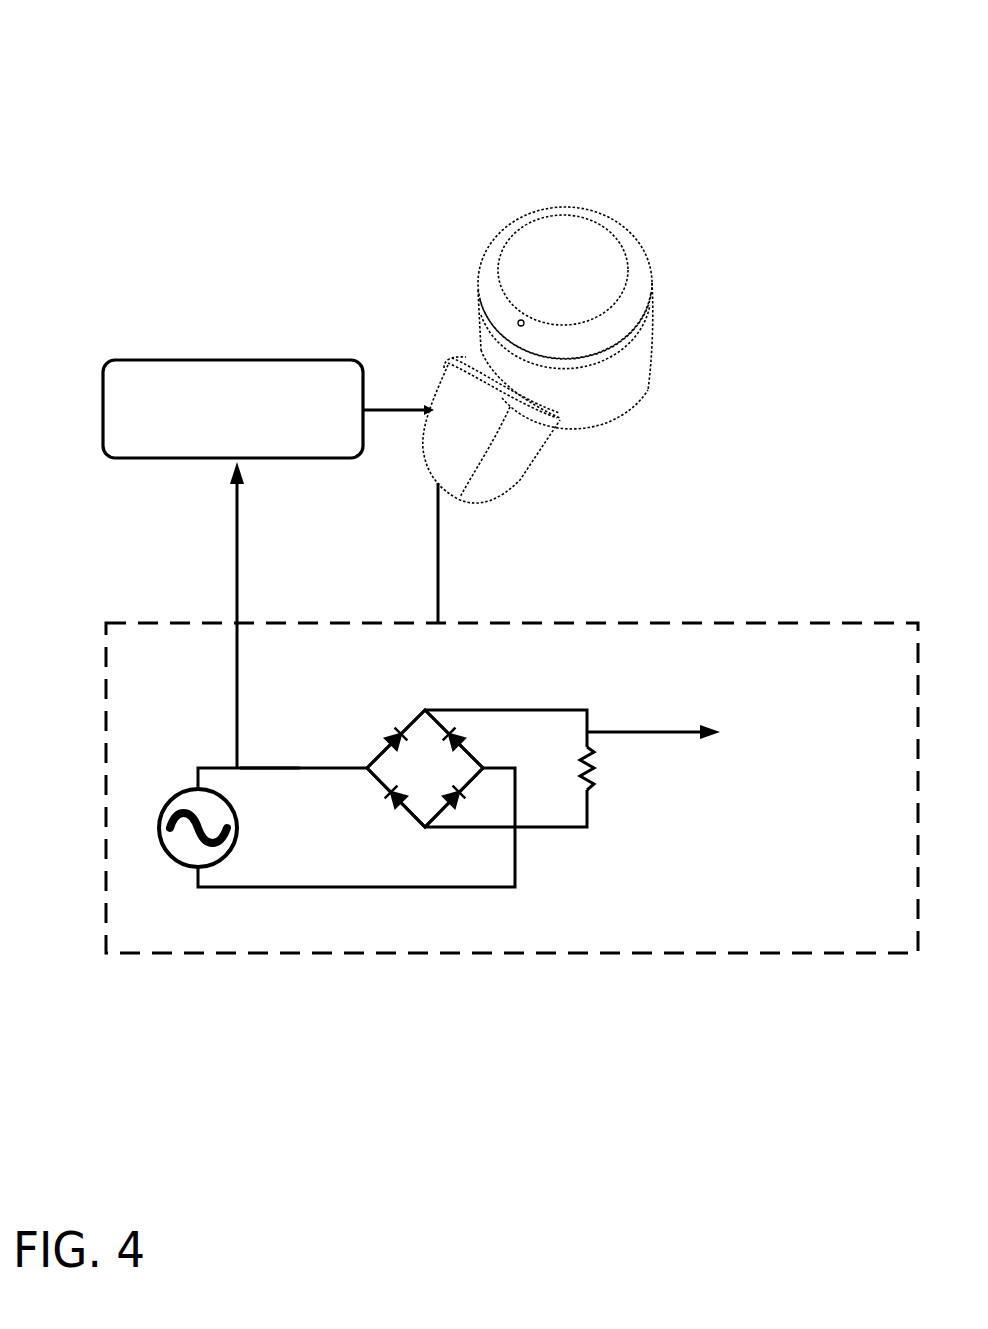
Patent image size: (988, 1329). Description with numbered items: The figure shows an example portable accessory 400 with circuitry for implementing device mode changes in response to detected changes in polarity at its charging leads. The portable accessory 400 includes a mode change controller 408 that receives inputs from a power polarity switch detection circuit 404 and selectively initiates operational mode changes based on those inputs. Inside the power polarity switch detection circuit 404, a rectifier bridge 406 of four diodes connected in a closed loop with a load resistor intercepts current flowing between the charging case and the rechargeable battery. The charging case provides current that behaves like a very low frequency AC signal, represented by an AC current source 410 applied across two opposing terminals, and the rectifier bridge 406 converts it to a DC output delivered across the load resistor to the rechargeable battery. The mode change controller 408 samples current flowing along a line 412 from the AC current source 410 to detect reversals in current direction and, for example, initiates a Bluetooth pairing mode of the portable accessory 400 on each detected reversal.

The portable accessory 400 is at (108, 74).
The power polarity switch detection circuit 404 is at (735, 667).
The rectifier bridge 406 is at (378, 785).
The mode change controller 408 is at (253, 451).
The AC current source 410 is at (227, 855).
The line 412 is at (252, 768).